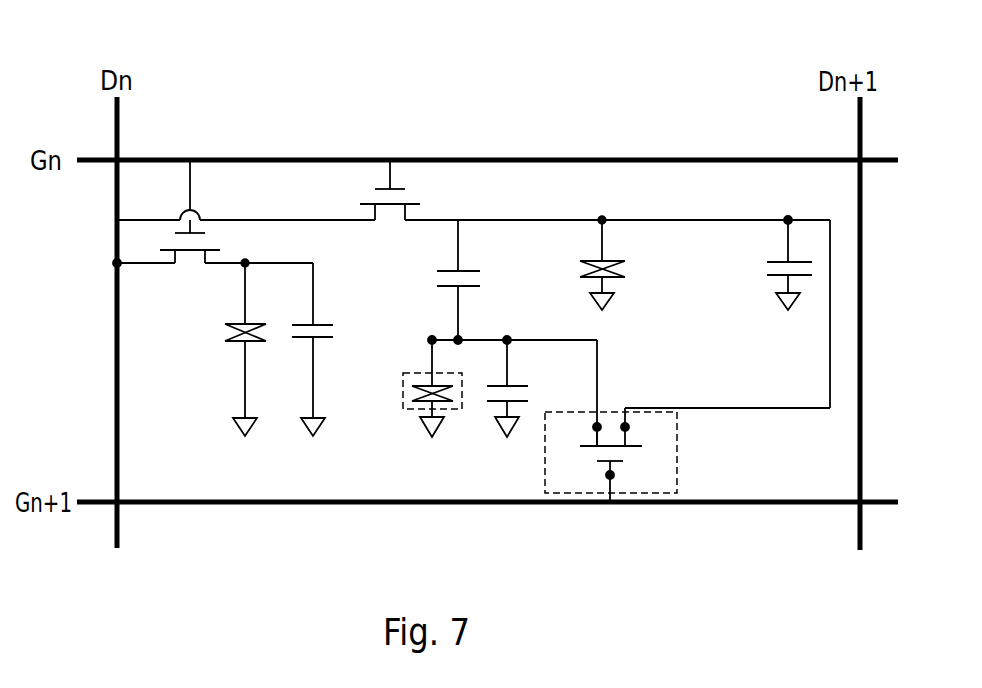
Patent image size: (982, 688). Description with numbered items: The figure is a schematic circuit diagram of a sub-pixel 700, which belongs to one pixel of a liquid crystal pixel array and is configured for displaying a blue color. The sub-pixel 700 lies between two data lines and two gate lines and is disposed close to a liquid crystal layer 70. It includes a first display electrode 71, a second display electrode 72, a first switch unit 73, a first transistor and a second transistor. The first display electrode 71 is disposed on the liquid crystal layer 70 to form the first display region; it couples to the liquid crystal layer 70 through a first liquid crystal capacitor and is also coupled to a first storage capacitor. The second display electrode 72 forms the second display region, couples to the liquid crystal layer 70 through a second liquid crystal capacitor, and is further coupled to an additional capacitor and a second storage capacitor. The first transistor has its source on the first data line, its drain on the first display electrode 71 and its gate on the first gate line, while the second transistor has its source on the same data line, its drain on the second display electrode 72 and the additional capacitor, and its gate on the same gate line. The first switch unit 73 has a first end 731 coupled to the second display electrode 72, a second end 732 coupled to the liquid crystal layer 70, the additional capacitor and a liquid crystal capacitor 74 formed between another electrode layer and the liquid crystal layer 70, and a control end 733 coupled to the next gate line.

The sub-pixel 700 is at (146, 40).
The liquid crystal layer 70 is at (423, 380).
The first display electrode 71 is at (245, 249).
The second display electrode 72 is at (601, 204).
The first switch unit 73 is at (545, 452).
The first end 731 is at (648, 427).
The second end 732 is at (575, 431).
The control end 733 is at (630, 481).
The liquid crystal capacitor 74 is at (403, 407).